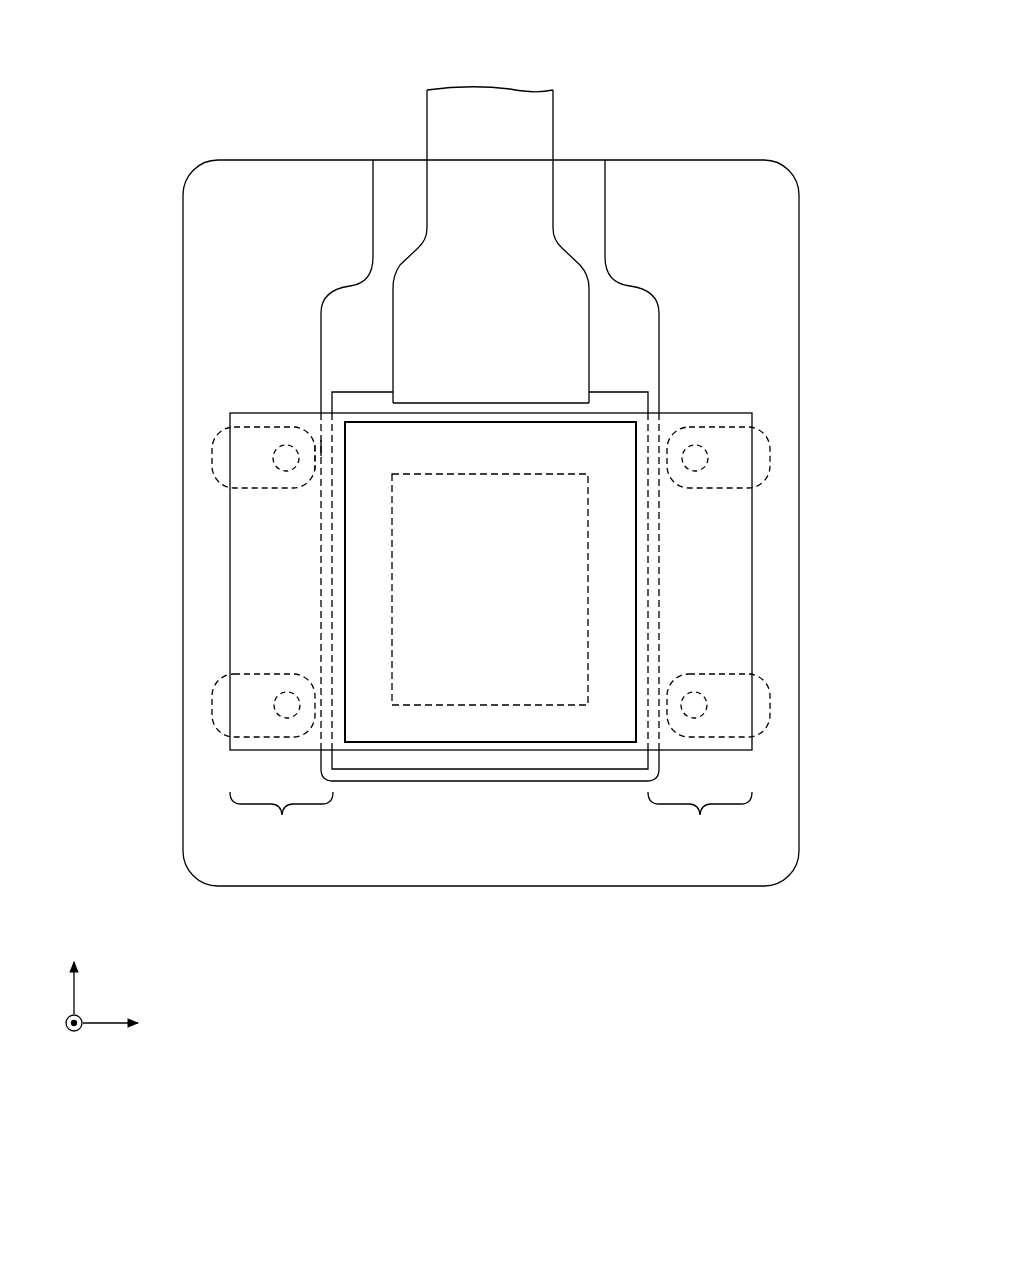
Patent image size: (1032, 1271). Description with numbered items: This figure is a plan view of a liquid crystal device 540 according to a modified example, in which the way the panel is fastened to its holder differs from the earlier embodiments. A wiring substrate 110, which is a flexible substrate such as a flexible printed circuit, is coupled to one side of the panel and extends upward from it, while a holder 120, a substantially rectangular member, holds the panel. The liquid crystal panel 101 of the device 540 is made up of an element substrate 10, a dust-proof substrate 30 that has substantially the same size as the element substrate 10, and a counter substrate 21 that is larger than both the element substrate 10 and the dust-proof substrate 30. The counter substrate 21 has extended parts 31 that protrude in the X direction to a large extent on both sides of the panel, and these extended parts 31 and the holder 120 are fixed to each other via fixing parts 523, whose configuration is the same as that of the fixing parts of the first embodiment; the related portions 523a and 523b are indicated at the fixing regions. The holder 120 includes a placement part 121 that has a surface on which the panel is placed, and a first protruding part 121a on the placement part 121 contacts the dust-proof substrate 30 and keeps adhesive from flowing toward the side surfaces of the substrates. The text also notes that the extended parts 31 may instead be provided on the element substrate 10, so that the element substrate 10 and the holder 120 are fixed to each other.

The liquid crystal device 540 is at (870, 41).
The wiring substrate 110 is at (553, 118).
The holder 120 is at (799, 622).
The element substrate 10 is at (624, 390).
The liquid crystal panel 101 is at (710, 400).
The counter substrate 21 is at (752, 520).
The dust-proof substrate 30 is at (636, 563).
The extended parts 31 is at (491, 823).
The placement part 121 is at (293, 623).
The first protruding part 121a is at (330, 447).
The fixing part 523 is at (210, 455).
The fixing hole 523a is at (258, 474).
The pad edge 523b is at (300, 432).